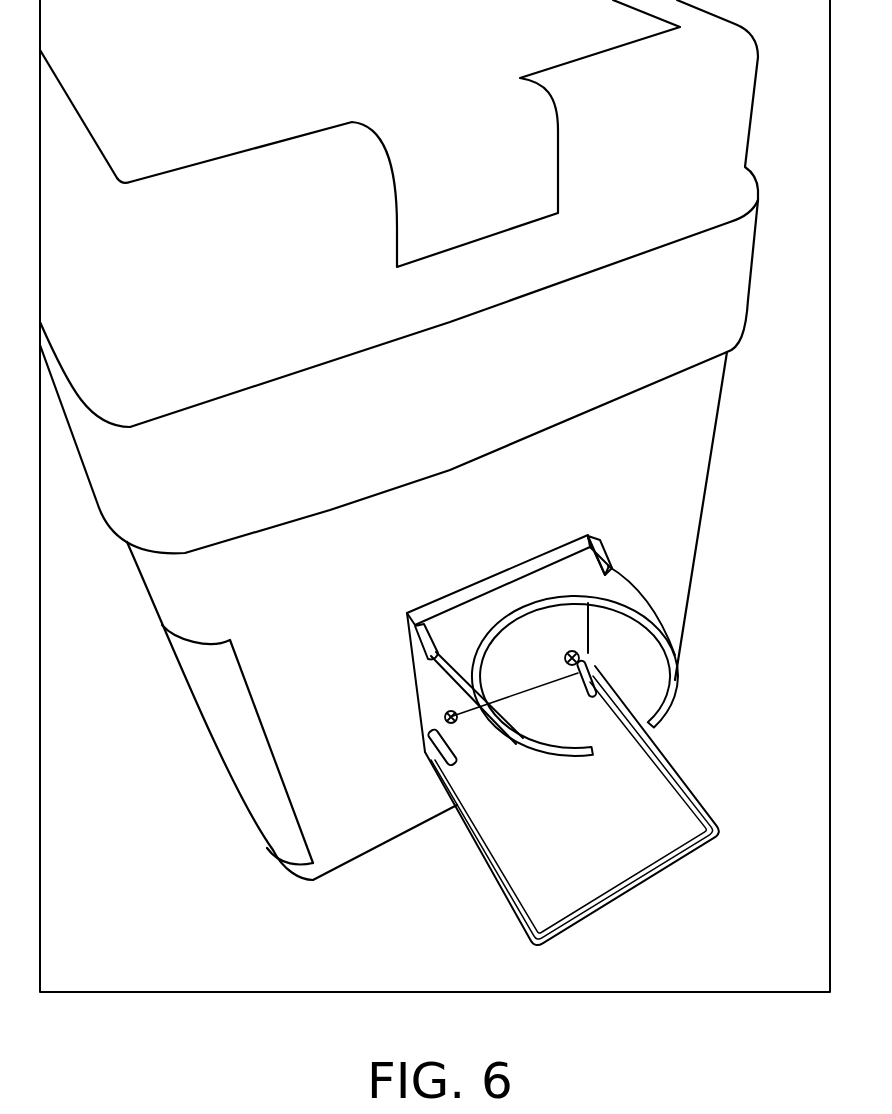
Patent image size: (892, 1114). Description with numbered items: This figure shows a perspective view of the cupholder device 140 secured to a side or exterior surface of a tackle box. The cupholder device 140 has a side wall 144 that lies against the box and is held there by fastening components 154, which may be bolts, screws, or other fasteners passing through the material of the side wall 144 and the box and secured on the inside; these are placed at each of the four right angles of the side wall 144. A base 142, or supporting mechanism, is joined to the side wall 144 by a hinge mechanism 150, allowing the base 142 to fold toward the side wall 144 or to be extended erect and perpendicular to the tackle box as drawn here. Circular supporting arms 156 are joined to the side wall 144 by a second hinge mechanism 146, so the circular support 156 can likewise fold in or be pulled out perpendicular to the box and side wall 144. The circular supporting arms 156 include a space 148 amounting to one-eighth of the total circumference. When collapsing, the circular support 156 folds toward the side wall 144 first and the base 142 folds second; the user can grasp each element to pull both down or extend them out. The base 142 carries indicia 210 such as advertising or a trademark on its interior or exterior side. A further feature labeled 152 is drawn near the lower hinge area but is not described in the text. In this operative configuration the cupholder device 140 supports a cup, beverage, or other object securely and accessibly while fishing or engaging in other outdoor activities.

The cupholder device 140 is at (724, 796).
The base 142 is at (522, 925).
The side wall 144 is at (418, 700).
The hinge mechanism 146 is at (607, 562).
The space 148 is at (600, 753).
The hinge mechanism 150 is at (588, 667).
The mounting aperture 152 is at (425, 730).
The fastening component 154 is at (443, 712).
The circular supporting arms 156 is at (513, 737).
The indicia 210 is at (612, 786).